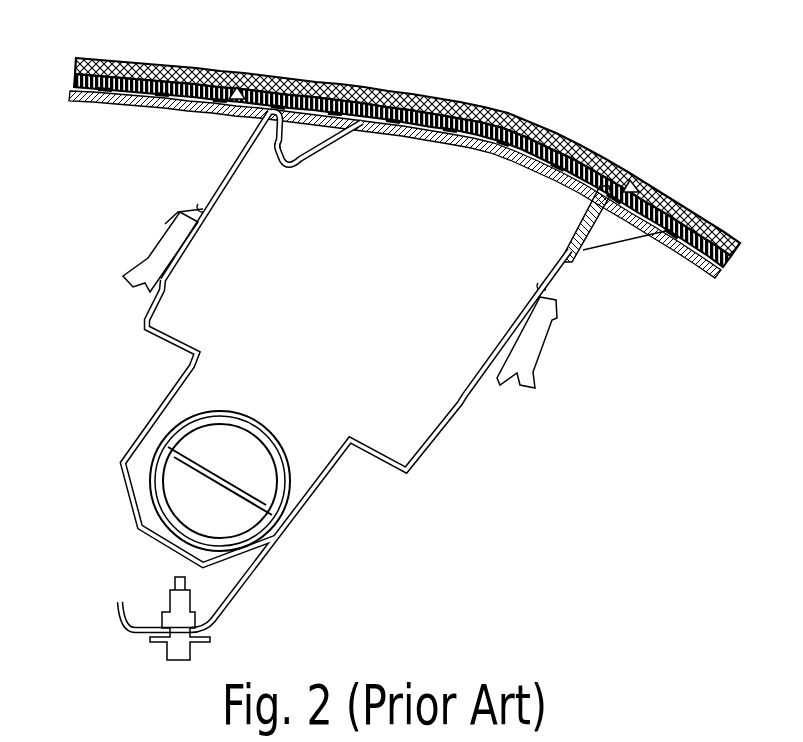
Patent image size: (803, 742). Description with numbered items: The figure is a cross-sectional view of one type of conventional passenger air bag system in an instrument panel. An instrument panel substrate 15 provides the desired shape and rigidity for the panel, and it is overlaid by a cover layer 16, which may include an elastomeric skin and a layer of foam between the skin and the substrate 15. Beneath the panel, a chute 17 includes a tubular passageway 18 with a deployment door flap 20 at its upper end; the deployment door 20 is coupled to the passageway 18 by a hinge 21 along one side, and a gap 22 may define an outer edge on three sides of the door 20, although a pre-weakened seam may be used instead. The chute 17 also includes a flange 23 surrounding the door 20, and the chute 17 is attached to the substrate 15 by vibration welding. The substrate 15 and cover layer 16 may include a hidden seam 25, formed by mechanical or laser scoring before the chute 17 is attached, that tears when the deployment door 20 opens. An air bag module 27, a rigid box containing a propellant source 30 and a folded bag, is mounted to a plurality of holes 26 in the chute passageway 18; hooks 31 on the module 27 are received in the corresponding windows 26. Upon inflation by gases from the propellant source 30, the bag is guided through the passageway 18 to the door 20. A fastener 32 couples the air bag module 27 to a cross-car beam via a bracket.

The instrument panel substrate 15 is at (388, 174).
The cover layer 16 is at (548, 118).
The chute 17 is at (228, 174).
The tubular passageway 18 is at (578, 258).
The deployment door flap 20 is at (455, 142).
The hinge 21 is at (335, 150).
The gap 22 is at (608, 155).
The flange 23 is at (118, 106).
The hidden seam 25 is at (237, 87).
The holes 26 is at (203, 208).
The air bag module 27 is at (394, 371).
The propellant source 30 is at (277, 530).
The hooks 31 is at (168, 220).
The fastener 32 is at (205, 640).